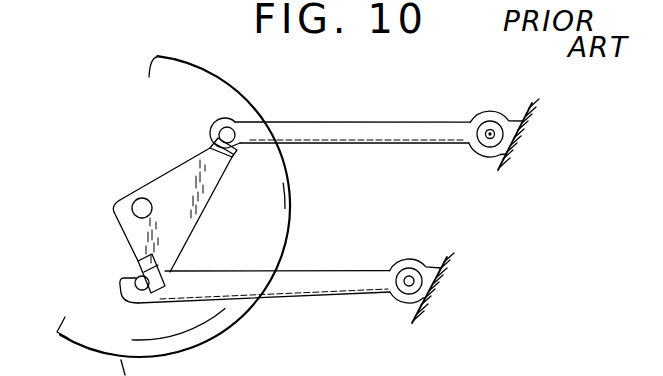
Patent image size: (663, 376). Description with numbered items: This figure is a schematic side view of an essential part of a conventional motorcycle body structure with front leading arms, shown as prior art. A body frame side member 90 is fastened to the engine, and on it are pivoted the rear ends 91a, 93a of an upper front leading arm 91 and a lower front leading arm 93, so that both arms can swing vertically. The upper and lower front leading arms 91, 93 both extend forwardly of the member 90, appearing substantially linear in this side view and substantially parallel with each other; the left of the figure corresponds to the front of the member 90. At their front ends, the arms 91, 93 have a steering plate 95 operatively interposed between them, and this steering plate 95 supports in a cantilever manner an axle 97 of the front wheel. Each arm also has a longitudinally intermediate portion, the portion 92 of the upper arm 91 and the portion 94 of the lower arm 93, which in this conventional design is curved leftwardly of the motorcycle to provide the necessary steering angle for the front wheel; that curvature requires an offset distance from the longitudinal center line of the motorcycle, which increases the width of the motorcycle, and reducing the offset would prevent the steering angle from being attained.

The body frame side member 90 is at (495, 163).
The upper front leading arm 91 is at (398, 133).
The rear end of upper front leading arm 91a is at (490, 132).
The longitudinally intermediate portion of upper front leading arm 92 is at (297, 133).
The lower front leading arm 93 is at (352, 273).
The rear end of lower front leading arm 93a is at (408, 270).
The longitudinally intermediate portion of lower front leading arm 94 is at (238, 290).
The steering plate 95 is at (177, 177).
The axle 97 is at (133, 210).